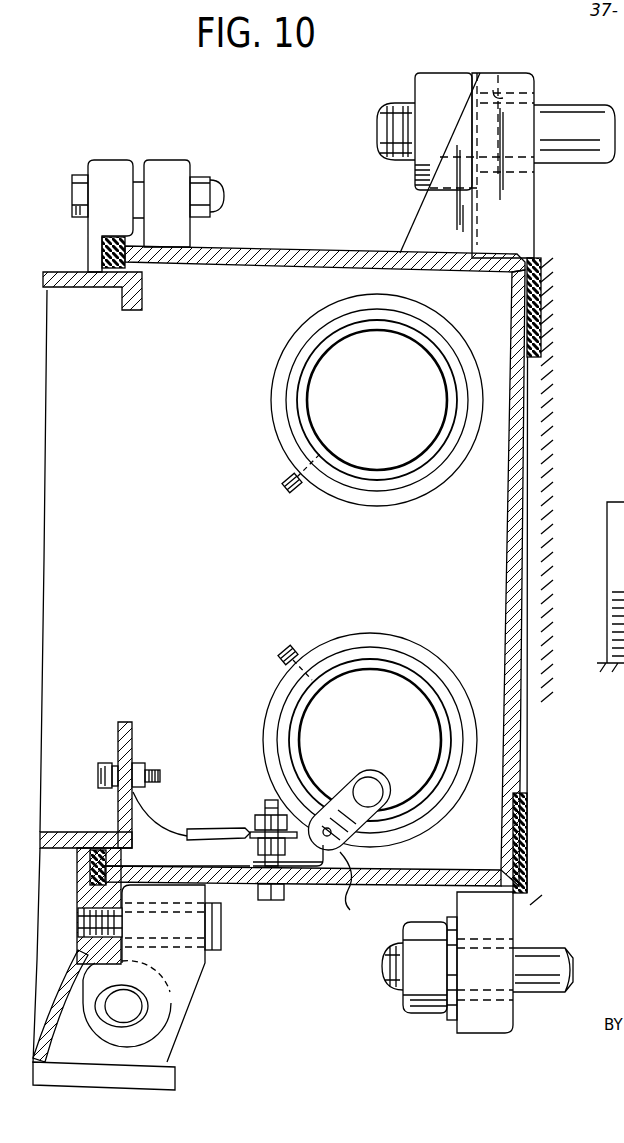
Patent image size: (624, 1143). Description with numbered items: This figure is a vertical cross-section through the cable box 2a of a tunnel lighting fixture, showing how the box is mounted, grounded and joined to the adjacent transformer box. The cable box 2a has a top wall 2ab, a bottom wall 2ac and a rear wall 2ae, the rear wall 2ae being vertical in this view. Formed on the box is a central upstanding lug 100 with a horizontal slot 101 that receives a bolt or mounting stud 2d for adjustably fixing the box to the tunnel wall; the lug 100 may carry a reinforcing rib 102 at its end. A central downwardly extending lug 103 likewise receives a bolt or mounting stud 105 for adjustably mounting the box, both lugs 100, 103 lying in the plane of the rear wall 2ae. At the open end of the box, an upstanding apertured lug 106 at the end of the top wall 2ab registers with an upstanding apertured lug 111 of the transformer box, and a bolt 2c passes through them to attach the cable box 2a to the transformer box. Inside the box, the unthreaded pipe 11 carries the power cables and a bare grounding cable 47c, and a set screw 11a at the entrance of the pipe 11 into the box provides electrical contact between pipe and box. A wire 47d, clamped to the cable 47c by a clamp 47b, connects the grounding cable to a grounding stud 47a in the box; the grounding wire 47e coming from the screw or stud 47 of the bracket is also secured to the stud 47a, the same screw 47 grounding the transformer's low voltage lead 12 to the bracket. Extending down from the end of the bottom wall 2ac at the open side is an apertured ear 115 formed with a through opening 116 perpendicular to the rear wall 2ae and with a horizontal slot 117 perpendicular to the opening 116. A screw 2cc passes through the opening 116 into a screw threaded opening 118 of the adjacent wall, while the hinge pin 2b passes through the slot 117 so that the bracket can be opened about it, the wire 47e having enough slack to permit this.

The cable box 2a is at (310, 620).
The top wall 2ab is at (262, 246).
The rear wall 2ae is at (522, 428).
The bottom wall 2ac is at (490, 886).
The hinge pin 2b is at (152, 1010).
The bolt 2c is at (80, 174).
The screw 2cc is at (222, 941).
The mounting stud 2d is at (380, 148).
The pipe 11 is at (316, 362).
The set screw 11a is at (291, 492).
The low voltage lead 12 is at (115, 740).
The screw 47 is at (160, 772).
The grounding stud 47a is at (268, 796).
The clamp 47b is at (372, 812).
The grounding cable 47c is at (372, 786).
The wire 47d is at (362, 889).
The grounding wire 47e is at (202, 830).
The upstanding lug 100 is at (518, 232).
The horizontal slot 101 is at (498, 90).
The reinforcing rib 102 is at (410, 222).
The downwardly extending lug 103 is at (488, 1022).
The mounting stud 105 is at (545, 948).
The apertured lug 106 is at (185, 160).
The apertured lug 111 is at (112, 160).
The apertured ear 115 is at (192, 968).
The through opening 116 is at (180, 860).
The horizontal slot 117 is at (150, 996).
The screw threaded opening 118 is at (84, 942).